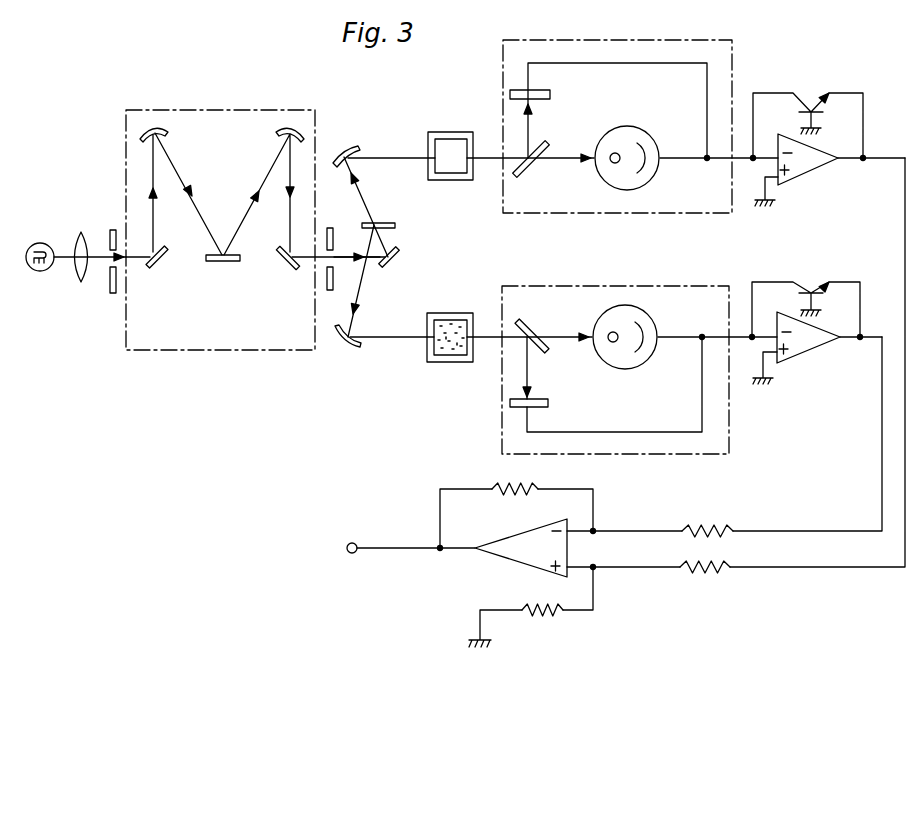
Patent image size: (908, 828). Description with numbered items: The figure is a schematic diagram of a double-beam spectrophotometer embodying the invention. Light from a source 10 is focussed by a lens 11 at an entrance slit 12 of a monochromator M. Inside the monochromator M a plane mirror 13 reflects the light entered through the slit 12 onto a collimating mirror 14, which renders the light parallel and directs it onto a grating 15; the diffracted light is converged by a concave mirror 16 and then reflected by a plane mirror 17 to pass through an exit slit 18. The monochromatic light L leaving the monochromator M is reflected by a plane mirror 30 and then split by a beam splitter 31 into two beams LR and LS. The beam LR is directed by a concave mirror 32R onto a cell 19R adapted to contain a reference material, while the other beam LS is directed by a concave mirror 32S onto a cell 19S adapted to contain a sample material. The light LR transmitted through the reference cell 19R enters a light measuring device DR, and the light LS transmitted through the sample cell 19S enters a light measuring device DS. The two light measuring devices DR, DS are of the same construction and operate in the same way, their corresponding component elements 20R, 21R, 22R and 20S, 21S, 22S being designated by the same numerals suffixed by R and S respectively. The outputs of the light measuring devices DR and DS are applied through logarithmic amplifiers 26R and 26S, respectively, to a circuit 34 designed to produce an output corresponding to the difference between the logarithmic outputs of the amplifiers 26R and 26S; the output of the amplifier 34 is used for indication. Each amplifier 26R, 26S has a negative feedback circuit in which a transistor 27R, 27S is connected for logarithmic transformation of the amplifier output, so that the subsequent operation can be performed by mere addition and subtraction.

The source 10 is at (40, 243).
The lens 11 is at (80, 239).
The entrance slit 12 is at (110, 262).
The plane mirror 13 is at (155, 266).
The collimating mirror 14 is at (163, 133).
The grating 15 is at (228, 262).
The concave mirror 16 is at (281, 133).
The plane mirror 17 is at (287, 268).
The exit slit 18 is at (334, 262).
The monochromator M is at (228, 110).
The monochromatic light L is at (345, 254).
The plane mirror 30 is at (394, 264).
The beam splitter 31 is at (391, 222).
The reference beam LR is at (366, 192).
The sample beam LS is at (363, 302).
The concave mirror 32R is at (342, 147).
The concave mirror 32S is at (342, 345).
The reference cell 19R is at (447, 132).
The sample cell 19S is at (446, 362).
The light measuring device DR is at (648, 38).
The light measuring device DS is at (700, 286).
The light measuring device component 20R is at (537, 168).
The light measuring device component 20S is at (536, 329).
The light measuring device component 21R is at (552, 94).
The light measuring device component 21S is at (552, 402).
The light measuring device component 22R is at (650, 181).
The light measuring device component 22S is at (648, 316).
The logarithmic amplifier 26R is at (811, 182).
The logarithmic amplifier 26S is at (810, 360).
The transistor 27R is at (806, 106).
The transistor 27S is at (806, 288).
The circuit 34 is at (503, 558).